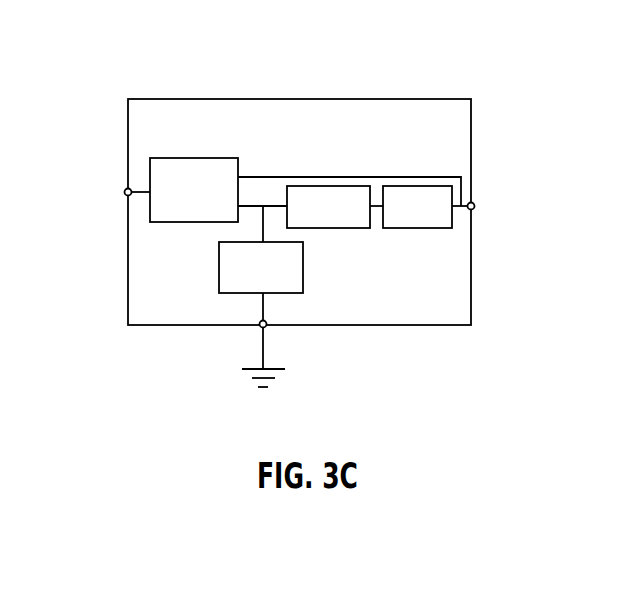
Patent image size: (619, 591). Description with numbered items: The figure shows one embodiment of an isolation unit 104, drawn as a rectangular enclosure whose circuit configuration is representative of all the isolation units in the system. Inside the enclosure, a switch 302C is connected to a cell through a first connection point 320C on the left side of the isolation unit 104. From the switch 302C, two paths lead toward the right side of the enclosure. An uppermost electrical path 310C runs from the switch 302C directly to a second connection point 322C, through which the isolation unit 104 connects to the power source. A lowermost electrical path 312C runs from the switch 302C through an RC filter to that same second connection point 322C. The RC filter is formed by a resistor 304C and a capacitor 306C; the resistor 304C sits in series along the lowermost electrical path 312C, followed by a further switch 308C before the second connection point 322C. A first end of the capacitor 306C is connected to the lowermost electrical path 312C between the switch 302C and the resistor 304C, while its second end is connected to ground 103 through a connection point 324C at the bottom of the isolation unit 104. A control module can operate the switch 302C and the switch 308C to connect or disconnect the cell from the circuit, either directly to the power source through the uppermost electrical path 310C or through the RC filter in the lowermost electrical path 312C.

The isolation unit 104 is at (450, 99).
The switch 302C is at (196, 157).
The lowermost electrical path 312C is at (253, 206).
The uppermost electrical path 310C is at (363, 177).
The resistor 304C is at (359, 229).
The switch 308C is at (443, 228).
The capacitor 306C is at (288, 293).
The first connection point 320C is at (125, 188).
The second connection point 322C is at (474, 204).
The terminal 324C is at (259, 329).
The ground 103 is at (257, 352).